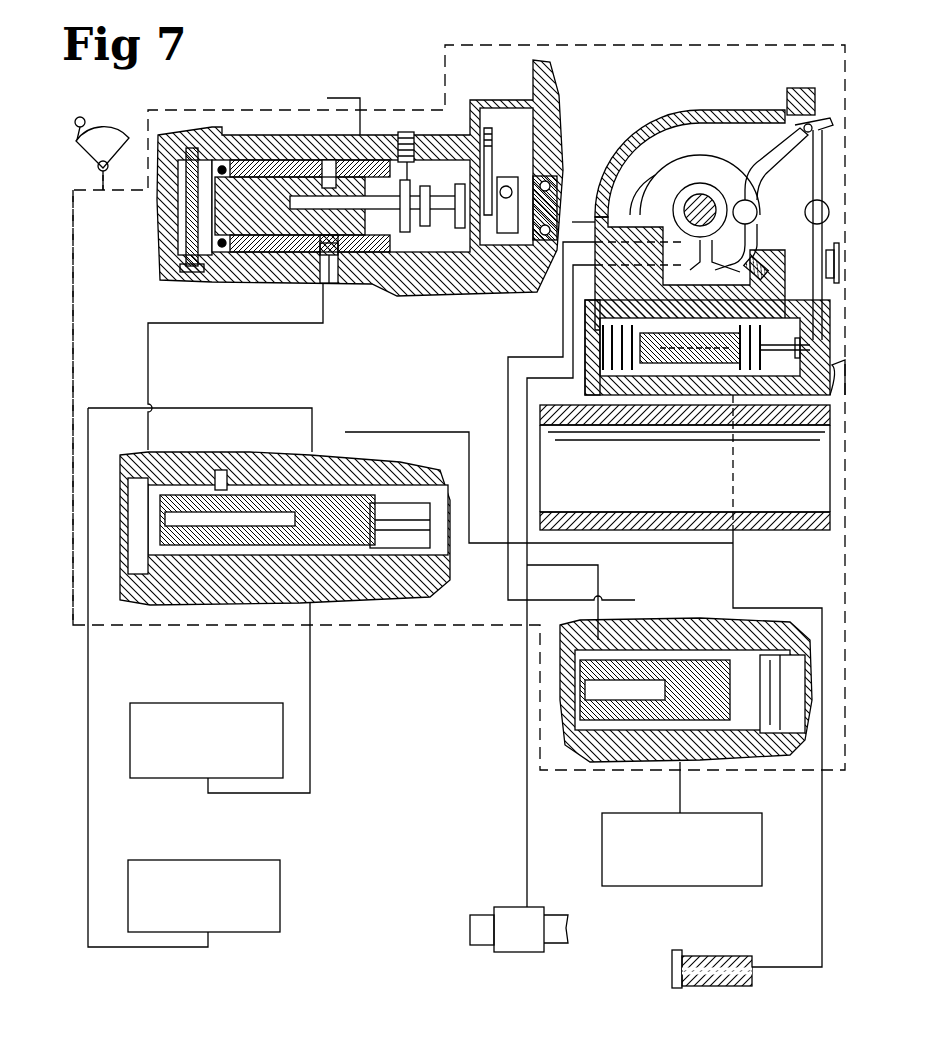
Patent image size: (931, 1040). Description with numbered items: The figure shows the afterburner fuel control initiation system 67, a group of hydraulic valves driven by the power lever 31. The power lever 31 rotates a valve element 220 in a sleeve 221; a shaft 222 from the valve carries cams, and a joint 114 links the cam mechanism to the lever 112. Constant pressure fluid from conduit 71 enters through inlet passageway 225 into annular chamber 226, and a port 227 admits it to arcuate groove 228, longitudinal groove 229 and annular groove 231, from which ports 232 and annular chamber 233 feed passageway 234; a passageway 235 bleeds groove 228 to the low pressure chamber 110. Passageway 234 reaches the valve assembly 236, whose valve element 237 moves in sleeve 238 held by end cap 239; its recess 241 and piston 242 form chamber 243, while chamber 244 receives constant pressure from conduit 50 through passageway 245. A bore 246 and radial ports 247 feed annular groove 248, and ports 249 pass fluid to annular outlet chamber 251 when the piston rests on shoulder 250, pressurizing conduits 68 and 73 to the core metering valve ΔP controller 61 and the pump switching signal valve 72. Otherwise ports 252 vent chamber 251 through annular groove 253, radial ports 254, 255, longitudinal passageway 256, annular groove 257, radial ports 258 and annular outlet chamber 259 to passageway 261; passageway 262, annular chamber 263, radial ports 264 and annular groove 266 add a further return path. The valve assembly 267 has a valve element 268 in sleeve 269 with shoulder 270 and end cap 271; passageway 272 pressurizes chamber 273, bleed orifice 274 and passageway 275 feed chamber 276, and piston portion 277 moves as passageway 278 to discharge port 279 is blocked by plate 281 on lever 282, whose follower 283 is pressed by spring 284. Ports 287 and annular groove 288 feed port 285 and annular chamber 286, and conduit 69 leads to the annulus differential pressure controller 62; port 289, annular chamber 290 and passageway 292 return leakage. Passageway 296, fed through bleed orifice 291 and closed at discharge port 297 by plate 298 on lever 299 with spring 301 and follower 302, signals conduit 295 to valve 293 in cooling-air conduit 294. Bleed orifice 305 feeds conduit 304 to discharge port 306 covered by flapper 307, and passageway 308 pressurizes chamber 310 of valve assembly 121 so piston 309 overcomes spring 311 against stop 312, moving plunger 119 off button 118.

The power lever 31 is at (76, 146).
The conduit 50 is at (430, 633).
The core metering valve differential pressure controller 61 is at (143, 778).
The annulus differential pressure controller 62 is at (763, 856).
The afterburner fuel control initiation system 67 is at (73, 360).
The conduit 68 is at (311, 770).
The conduit 69 is at (681, 798).
The conduit 71 is at (353, 97).
The pump switching signal valve 72 is at (255, 860).
The conduit 73 is at (205, 409).
The low pressure chamber 110 is at (758, 125).
The lever 112 is at (823, 160).
The ball joint 114 is at (820, 202).
The button 118 is at (826, 325).
The plunger 119 is at (785, 352).
The valve assembly 121 is at (665, 395).
The valve element 220 is at (268, 150).
The sleeve 221 is at (285, 158).
The shaft 222 is at (430, 230).
The inlet passageway 225 is at (372, 140).
The annular chamber 226 is at (330, 160).
The port 227 is at (360, 292).
The arcuate groove 228 is at (393, 190).
The longitudinal groove 229 is at (290, 198).
The annular groove 231 is at (338, 262).
The ports 232 is at (266, 266).
The annular chamber 233 is at (292, 262).
The passageway 234 is at (255, 328).
The passageway 235 is at (410, 174).
The valve assembly 236 is at (366, 424).
The valve element 237 is at (392, 470).
The sleeve 238 is at (380, 600).
The end cap 239 is at (122, 568).
The recess 241 is at (120, 472).
The piston 242 is at (172, 452).
The chamber 243 is at (165, 522).
The chamber 244 is at (448, 552).
The passageway 245 is at (446, 580).
The bore 246 is at (376, 518).
The radial ports 247 is at (402, 527).
The annular groove 248 is at (350, 598).
The ports 249 is at (335, 556).
The shoulder 250 is at (190, 465).
The annular outlet chamber 251 is at (385, 470).
The ports 252 is at (352, 470).
The annular groove 253 is at (286, 596).
The radial ports 254 is at (262, 596).
The radial ports 255 is at (150, 538).
The longitudinal passageway 256 is at (150, 512).
The annular groove 257 is at (150, 500).
The radial ports 258 is at (208, 598).
The annular outlet chamber 259 is at (170, 606).
The passageway 261 is at (178, 612).
The passageway 262 is at (432, 431).
The annular chamber 263 is at (240, 556).
The radial ports 264 is at (262, 470).
The annular groove 266 is at (220, 470).
The valve assembly 267 is at (582, 789).
The valve element 268 is at (692, 735).
The sleeve 269 is at (605, 735).
The shoulder 270 is at (565, 661).
The end cap 271 is at (560, 728).
The passageway 272 is at (785, 677).
The chamber 273 is at (740, 738).
The bleed orifice 274 is at (690, 690).
The passageway 275 is at (568, 693).
The chamber 276 is at (565, 680).
The piston portion 277 is at (570, 710).
The passageway 278 is at (600, 575).
The discharge port 279 is at (660, 280).
The plate 281 is at (715, 274).
The lever 282 is at (782, 92).
The follower 283 is at (758, 205).
The spring 284 is at (770, 342).
The port 285 is at (685, 750).
The annular chamber 286 is at (688, 632).
The ports 287 is at (690, 702).
The annular groove 288 is at (655, 690).
The port 289 is at (643, 632).
The annular chamber 290 is at (655, 780).
The bleed orifice 291 is at (735, 720).
The passageway 292 is at (645, 750).
The valve 293 is at (540, 907).
The conduit 294 is at (478, 913).
The conduit 295 is at (527, 801).
The passageway 296 is at (690, 605).
The discharge port 297 is at (605, 215).
The plate 298 is at (678, 205).
The lever 299 is at (752, 170).
The spring 301 is at (752, 220).
The follower 302 is at (728, 192).
The conduit 304 is at (821, 607).
The bleed orifice 305 is at (785, 655).
The discharge port 306 is at (703, 985).
The flapper 307 is at (672, 984).
The passageway 308 is at (735, 562).
The piston 309 is at (690, 334).
The chamber 310 is at (762, 360).
The spring 311 is at (598, 346).
The stop 312 is at (598, 327).